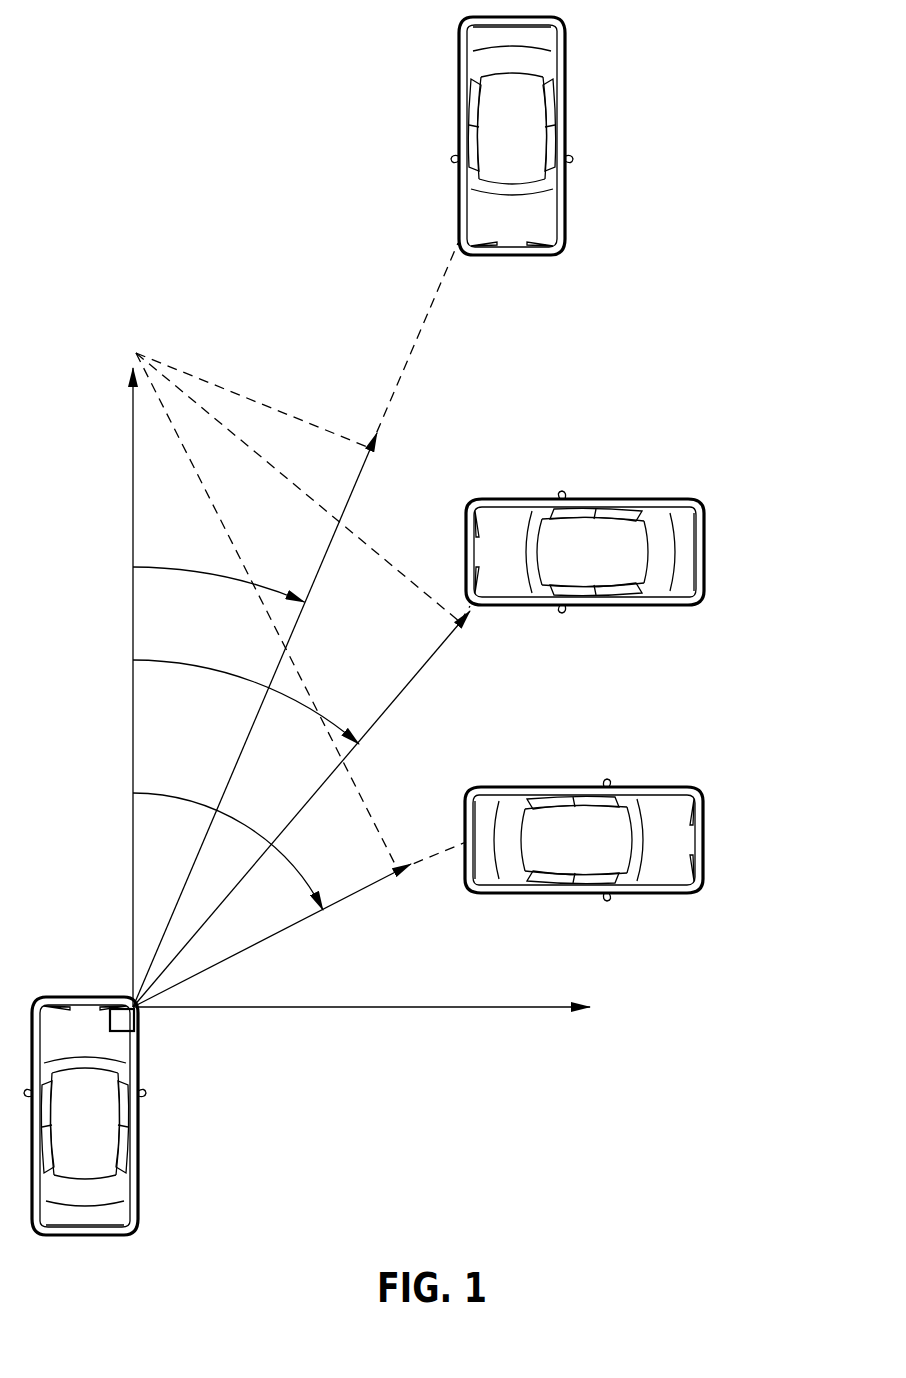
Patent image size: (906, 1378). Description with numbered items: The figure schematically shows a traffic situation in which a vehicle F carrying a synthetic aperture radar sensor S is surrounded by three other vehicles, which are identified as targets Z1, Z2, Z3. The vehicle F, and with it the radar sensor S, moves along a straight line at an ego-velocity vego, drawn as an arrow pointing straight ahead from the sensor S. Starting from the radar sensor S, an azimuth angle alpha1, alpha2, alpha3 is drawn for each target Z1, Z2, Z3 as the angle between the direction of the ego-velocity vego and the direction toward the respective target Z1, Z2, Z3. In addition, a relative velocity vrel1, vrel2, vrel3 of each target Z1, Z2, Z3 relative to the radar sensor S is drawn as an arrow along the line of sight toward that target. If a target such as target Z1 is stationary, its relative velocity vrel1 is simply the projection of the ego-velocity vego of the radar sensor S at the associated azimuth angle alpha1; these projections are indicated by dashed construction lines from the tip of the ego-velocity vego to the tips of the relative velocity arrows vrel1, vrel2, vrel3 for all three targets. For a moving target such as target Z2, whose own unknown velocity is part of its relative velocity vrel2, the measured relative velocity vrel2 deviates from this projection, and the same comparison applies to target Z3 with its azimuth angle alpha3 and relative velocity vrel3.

The vehicle F is at (74, 1017).
The synthetic aperture radar sensor S is at (123, 1020).
The target Z1 is at (527, 108).
The target Z2 is at (687, 554).
The target Z3 is at (687, 838).
The ego-velocity vego is at (96, 673).
The relative velocity vrel1 is at (353, 488).
The relative velocity vrel2 is at (432, 648).
The relative velocity vrel3 is at (365, 892).
The azimuth angle alpha1 is at (188, 565).
The azimuth angle alpha2 is at (205, 660).
The azimuth angle alpha3 is at (238, 822).